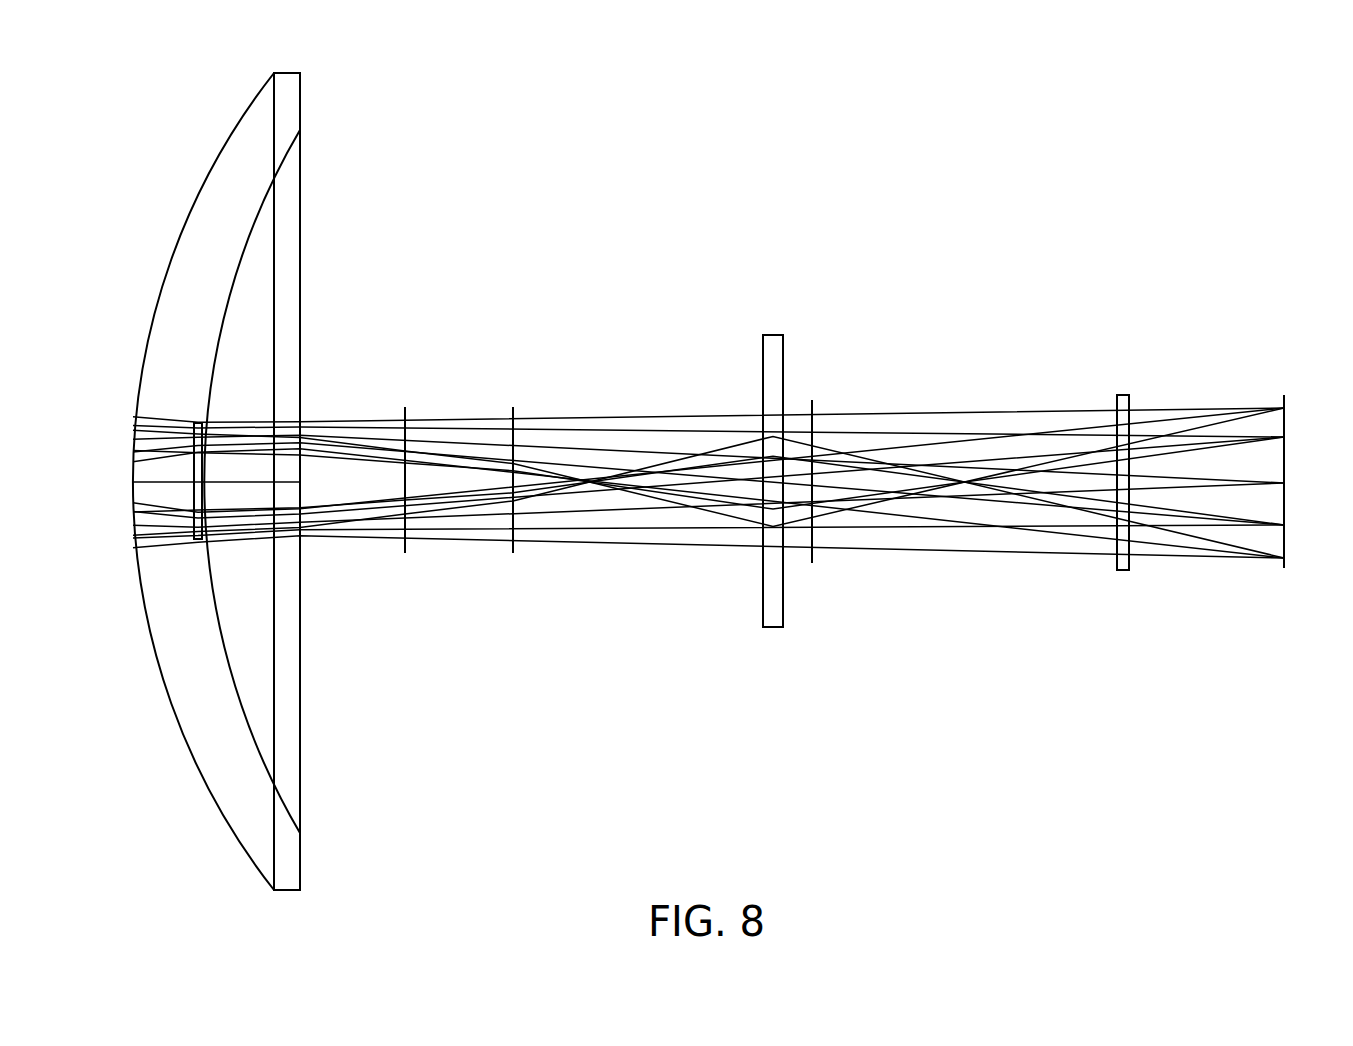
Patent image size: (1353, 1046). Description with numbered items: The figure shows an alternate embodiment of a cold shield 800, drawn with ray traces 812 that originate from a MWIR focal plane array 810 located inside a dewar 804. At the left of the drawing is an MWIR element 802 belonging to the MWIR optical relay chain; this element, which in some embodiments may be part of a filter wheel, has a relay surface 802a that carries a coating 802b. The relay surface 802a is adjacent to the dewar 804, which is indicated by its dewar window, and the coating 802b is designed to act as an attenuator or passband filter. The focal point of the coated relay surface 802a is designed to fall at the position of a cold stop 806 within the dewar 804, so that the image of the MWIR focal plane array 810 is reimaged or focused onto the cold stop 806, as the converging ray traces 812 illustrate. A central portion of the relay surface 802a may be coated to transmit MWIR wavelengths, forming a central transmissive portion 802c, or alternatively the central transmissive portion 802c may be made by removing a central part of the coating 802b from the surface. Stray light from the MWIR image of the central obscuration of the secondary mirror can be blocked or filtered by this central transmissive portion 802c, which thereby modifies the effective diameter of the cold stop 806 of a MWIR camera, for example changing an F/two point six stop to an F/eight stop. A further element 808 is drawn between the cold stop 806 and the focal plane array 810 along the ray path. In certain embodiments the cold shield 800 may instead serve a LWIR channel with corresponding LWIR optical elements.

The cold shield 800 is at (704, 481).
The MWIR element 802 is at (240, 481).
The relay surface 802a is at (184, 481).
The coating 802b is at (292, 481).
The central transmissive portion 802c is at (287, 513).
The dewar 804 is at (764, 542).
The cold stop 806 is at (829, 424).
The optical element 808 is at (1122, 545).
The MWIR focal plane array 810 is at (1288, 545).
The light rays 812 is at (633, 416).